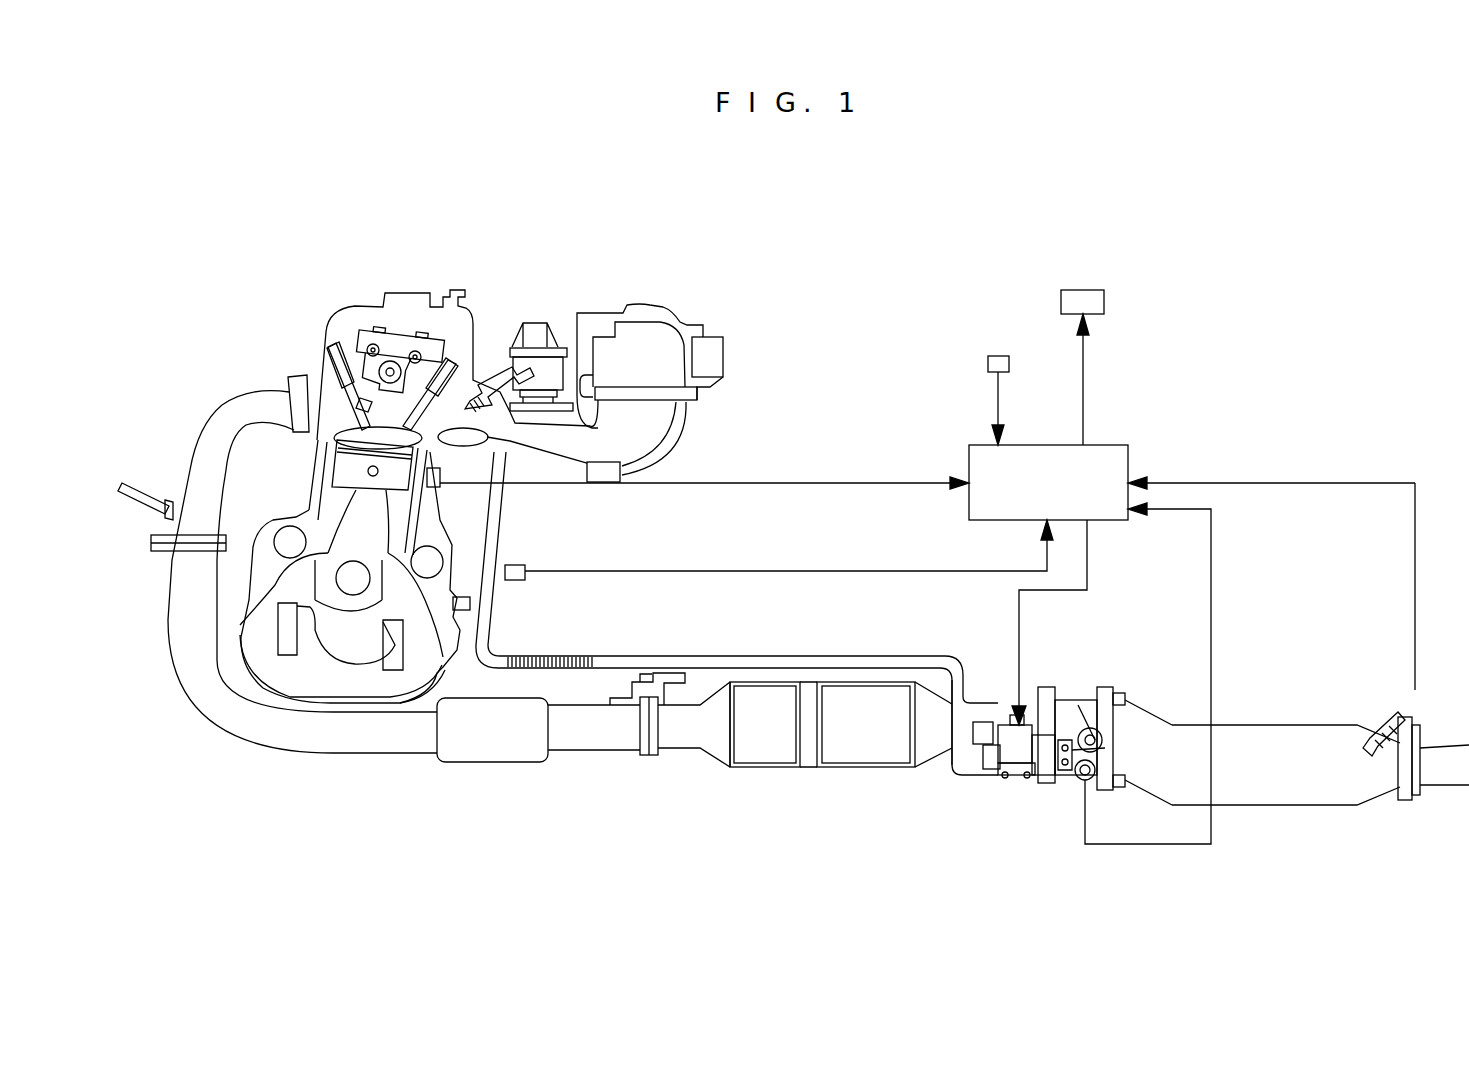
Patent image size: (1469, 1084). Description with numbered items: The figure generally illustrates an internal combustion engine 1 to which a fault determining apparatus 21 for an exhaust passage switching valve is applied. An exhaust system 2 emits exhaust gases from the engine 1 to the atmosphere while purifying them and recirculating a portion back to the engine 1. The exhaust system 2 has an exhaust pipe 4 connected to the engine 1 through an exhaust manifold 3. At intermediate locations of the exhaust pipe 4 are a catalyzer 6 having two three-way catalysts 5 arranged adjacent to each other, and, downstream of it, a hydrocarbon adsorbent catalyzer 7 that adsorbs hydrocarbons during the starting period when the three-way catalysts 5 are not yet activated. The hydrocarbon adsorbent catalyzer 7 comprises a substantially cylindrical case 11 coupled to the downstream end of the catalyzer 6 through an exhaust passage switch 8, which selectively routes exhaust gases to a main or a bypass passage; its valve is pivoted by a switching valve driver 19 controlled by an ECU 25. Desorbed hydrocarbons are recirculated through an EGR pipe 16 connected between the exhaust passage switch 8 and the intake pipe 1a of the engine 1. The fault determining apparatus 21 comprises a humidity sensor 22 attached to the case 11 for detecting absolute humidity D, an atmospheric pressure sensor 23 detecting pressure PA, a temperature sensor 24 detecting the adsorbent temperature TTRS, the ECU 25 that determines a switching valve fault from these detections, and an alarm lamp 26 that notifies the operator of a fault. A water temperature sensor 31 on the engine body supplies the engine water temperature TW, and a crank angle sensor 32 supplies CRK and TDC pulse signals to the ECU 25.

The internal combustion engine 1 is at (370, 282).
The intake pipe 1a is at (503, 435).
The exhaust system 2 is at (1177, 269).
The exhaust manifold 3 is at (297, 380).
The exhaust pipe 4 is at (248, 740).
The three-way catalyst 5 is at (768, 742).
The catalyzer 6 is at (772, 825).
The hydrocarbon adsorbent catalyzer 7 is at (1250, 696).
The exhaust passage switch 8 is at (1078, 693).
The case 11 is at (1298, 723).
The EGR pipe 16 is at (975, 780).
The switching valve driver 19 is at (1025, 780).
The fault determining apparatus 21 is at (1197, 378).
The humidity sensor 22 is at (1397, 705).
The atmospheric pressure sensor 23 is at (993, 355).
The temperature sensor 24 is at (1078, 788).
The ECU 25 is at (1105, 444).
The alarm lamp 26 is at (1073, 290).
The water temperature sensor 31 is at (443, 478).
The crank angle sensor 32 is at (522, 582).